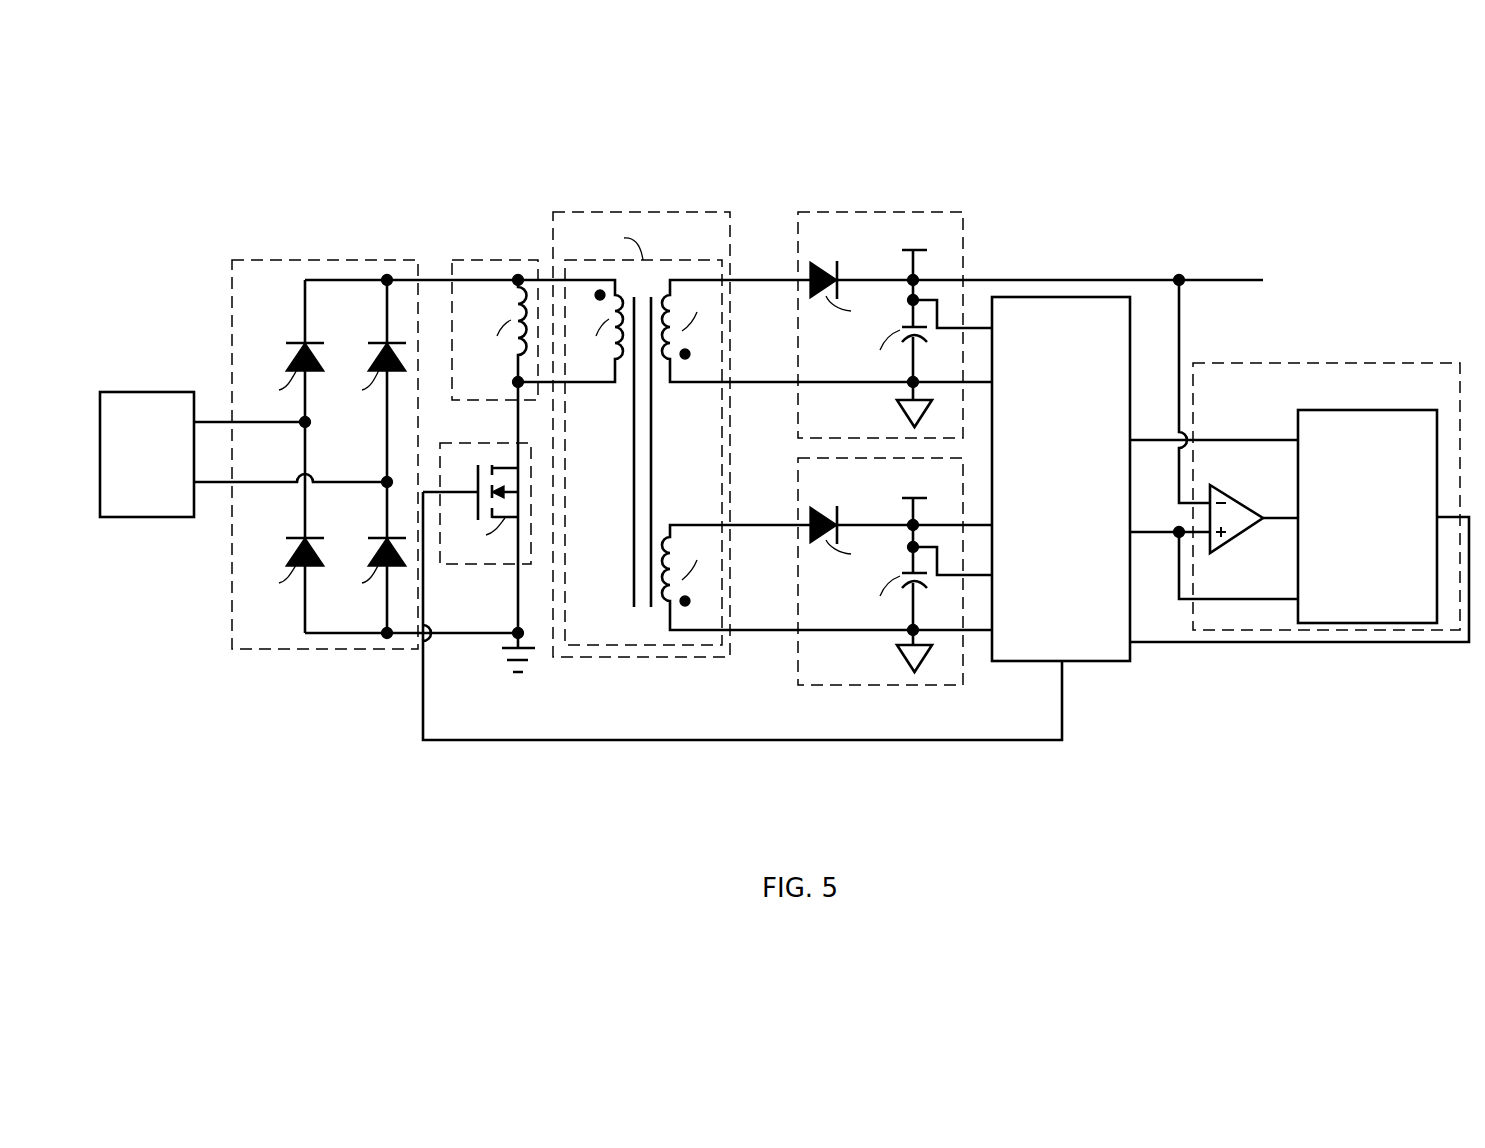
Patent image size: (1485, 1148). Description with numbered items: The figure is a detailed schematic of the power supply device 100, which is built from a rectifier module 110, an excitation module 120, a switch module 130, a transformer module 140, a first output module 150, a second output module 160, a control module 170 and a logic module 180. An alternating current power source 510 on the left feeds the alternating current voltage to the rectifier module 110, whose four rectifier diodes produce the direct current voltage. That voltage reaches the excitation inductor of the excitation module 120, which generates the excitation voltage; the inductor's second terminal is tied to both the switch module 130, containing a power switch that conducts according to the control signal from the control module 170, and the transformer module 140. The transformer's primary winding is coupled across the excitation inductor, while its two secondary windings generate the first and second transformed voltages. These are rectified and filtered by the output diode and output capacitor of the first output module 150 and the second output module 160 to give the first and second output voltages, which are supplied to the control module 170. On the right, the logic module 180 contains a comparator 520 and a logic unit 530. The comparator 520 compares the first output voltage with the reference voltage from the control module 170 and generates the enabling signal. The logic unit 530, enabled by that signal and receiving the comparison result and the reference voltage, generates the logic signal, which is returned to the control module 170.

The power supply device 100 is at (212, 134).
The rectifier module 110 is at (358, 260).
The excitation module 120 is at (509, 260).
The switch module 130 is at (493, 443).
The transformer module 140 is at (645, 212).
The first output module 150 is at (880, 212).
The second output module 160 is at (798, 676).
The control module 170 is at (1086, 297).
The logic module 180 is at (1326, 477).
The alternating current power source 510 is at (129, 518).
The comparator 520 is at (1228, 493).
The logic unit 530 is at (1370, 410).